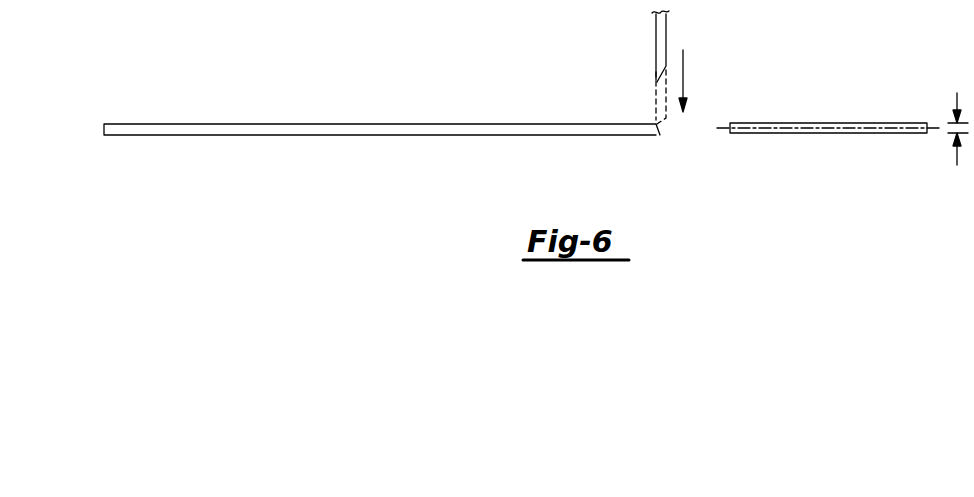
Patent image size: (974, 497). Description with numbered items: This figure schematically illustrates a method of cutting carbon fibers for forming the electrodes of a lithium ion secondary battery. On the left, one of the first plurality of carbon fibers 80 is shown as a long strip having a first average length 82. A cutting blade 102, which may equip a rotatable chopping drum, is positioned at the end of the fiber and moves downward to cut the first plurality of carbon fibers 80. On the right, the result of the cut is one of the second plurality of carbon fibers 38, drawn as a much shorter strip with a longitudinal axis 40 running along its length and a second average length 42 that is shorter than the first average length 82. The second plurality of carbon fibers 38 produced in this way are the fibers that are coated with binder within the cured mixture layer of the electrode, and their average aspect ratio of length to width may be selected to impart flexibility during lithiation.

The first plurality of carbon fibers 80 is at (347, 124).
The first average length 82 is at (656, 162).
The cutting blade 102 is at (656, 45).
The second plurality of carbon fibers 38 is at (827, 133).
The second average length 42 is at (927, 94).
The longitudinal axis 40 is at (722, 130).